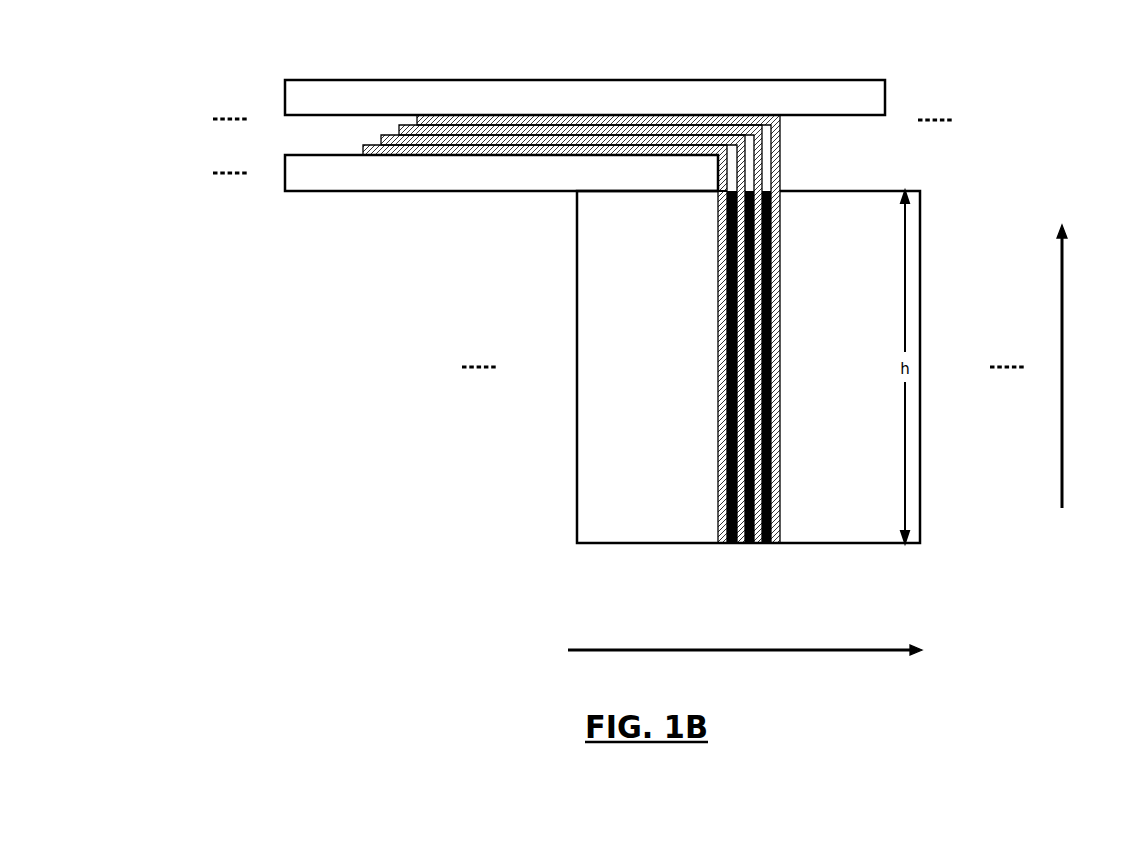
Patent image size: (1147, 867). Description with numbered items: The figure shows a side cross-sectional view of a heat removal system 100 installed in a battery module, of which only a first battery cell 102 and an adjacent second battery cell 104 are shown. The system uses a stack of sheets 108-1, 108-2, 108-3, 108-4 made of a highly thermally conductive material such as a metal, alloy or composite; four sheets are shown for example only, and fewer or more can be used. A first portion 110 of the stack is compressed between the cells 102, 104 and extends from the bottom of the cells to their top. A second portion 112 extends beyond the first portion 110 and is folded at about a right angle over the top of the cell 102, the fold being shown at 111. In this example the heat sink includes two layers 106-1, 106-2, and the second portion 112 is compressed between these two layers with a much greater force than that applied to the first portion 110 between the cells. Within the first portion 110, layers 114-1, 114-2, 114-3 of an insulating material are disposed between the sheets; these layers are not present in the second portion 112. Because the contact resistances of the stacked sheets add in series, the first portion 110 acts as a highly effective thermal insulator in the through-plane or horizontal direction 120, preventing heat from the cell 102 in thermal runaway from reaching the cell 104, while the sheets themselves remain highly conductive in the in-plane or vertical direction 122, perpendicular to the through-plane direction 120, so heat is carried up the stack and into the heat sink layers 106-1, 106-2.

The heat removal system 100 is at (975, 66).
The first battery cell 102 is at (577, 507).
The second battery cell 104 is at (922, 507).
The first layer of heat sink 106-1 is at (641, 80).
The second layer of heat sink 106-2 is at (338, 191).
The first sheet 108-1 is at (717, 488).
The second sheet 108-2 is at (740, 545).
The third sheet 108-3 is at (758, 545).
The fourth sheet 108-4 is at (779, 507).
The first portion of the sheets 110 is at (804, 293).
The fold 111 is at (718, 192).
The second portion of the sheets 112 is at (495, 229).
The first insulating layer 114-1 is at (732, 544).
The second insulating layer 114-2 is at (750, 545).
The third insulating layer 114-3 is at (767, 545).
The through-plane direction 120 is at (815, 652).
The in-plane direction 122 is at (1063, 368).